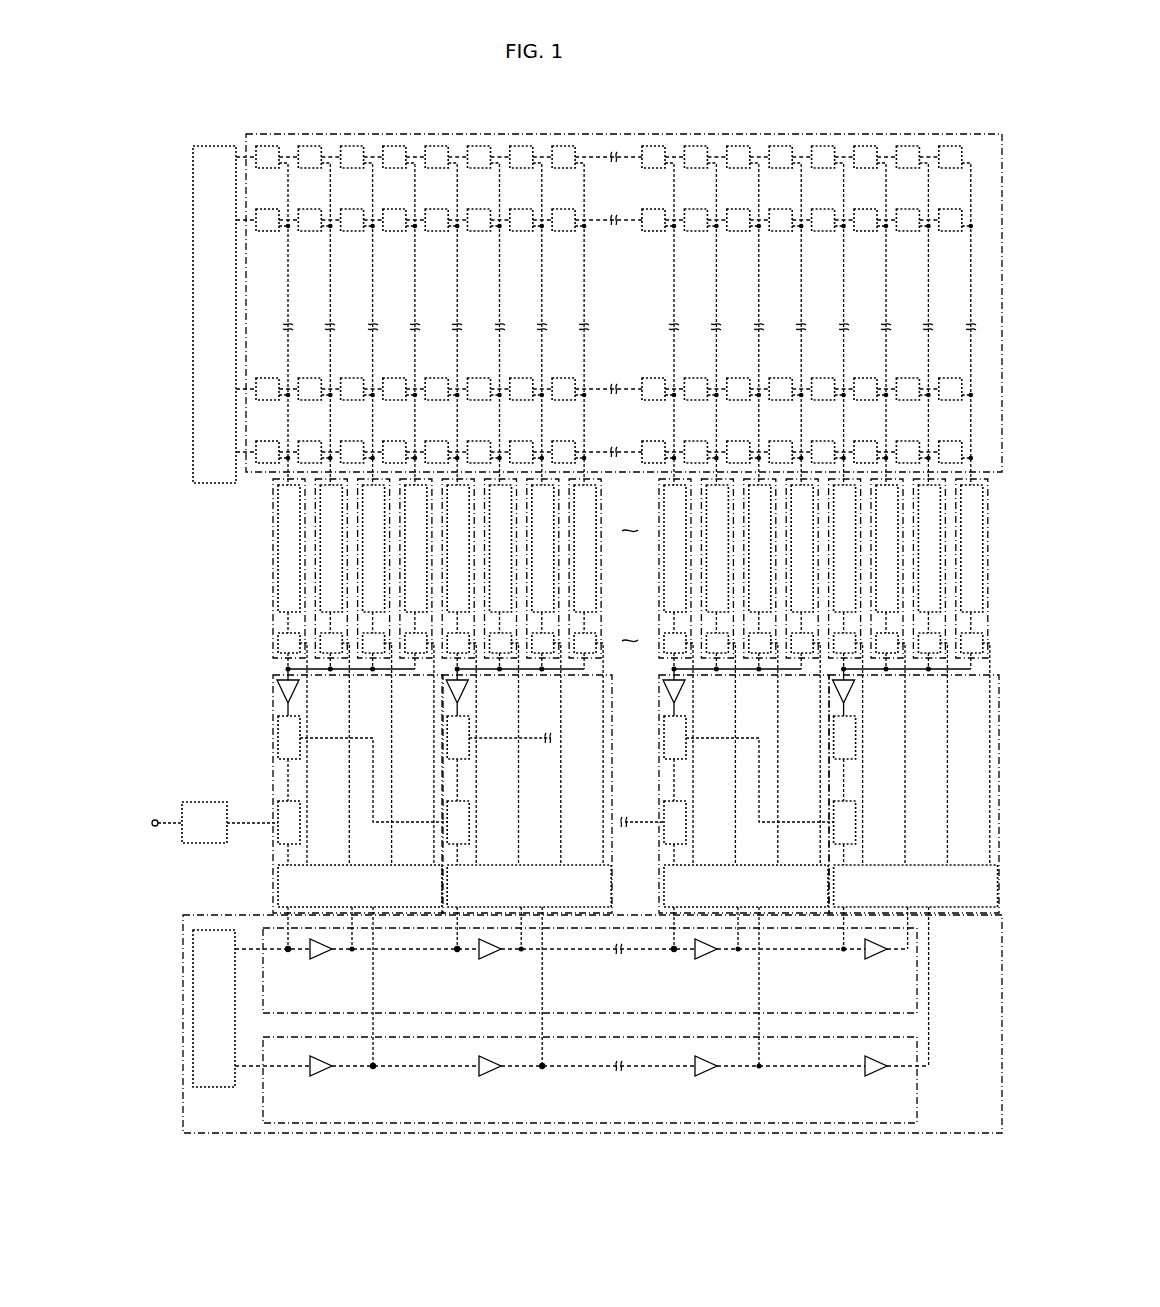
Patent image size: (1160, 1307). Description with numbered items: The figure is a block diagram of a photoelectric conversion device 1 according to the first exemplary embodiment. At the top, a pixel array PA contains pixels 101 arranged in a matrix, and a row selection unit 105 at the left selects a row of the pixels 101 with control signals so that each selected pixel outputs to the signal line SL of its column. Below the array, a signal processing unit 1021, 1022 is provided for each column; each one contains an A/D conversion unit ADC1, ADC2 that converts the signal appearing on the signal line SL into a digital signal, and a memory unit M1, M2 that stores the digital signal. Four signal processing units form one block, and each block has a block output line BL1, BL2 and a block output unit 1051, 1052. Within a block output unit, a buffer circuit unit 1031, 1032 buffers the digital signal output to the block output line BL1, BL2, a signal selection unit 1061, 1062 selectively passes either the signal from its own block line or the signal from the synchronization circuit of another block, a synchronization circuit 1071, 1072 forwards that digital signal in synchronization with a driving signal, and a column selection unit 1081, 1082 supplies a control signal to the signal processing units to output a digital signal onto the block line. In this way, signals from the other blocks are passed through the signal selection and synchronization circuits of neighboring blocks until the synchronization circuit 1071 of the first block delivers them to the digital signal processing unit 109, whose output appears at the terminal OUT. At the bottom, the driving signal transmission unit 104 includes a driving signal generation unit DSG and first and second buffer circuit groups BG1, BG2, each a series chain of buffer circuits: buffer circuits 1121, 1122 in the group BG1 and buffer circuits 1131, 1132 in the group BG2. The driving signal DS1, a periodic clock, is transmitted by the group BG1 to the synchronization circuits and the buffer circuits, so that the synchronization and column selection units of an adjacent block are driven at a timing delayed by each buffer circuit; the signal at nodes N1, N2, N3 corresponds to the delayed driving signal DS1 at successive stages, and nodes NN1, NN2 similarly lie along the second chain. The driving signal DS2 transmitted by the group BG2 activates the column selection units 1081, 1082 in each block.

The photoelectric conversion device 1 is at (558, 1182).
The pixel 101 is at (950, 146).
The driving signal transmission unit 104 is at (942, 1134).
The row selection unit 105 is at (214, 146).
The digital signal processing unit 109 is at (206, 802).
The pixel array PA is at (350, 134).
The signal line SL is at (288, 284).
The signal processing unit 1021 is at (273, 495).
The signal processing unit 1022 is at (315, 518).
The A/D conversion unit ADC1 is at (278, 562).
The A/D conversion unit ADC2 is at (320, 584).
The memory unit M1 is at (278, 646).
The memory unit M2 is at (320, 641).
The buffer circuit unit 1031 is at (277, 686).
The buffer circuit unit 1032 is at (466, 690).
The block output unit 1051 is at (273, 882).
The block output unit 1052 is at (614, 690).
The signal selection unit 1061 is at (278, 737).
The signal selection unit 1062 is at (468, 742).
The synchronization circuit 1071 is at (278, 822).
The synchronization circuit 1072 is at (468, 822).
The column selection unit 1081 is at (278, 895).
The column selection unit 1082 is at (587, 910).
The block output line BL1 is at (366, 672).
The block output line BL2 is at (580, 672).
The output terminal OUT is at (155, 820).
The driving signal DS1 is at (250, 948).
The driving signal DS2 is at (250, 1068).
The driving signal generation unit DSG is at (217, 1088).
The buffer circuit group BG1 is at (917, 968).
The buffer circuit group BG2 is at (917, 1088).
The node N1 is at (288, 953).
The node N2 is at (458, 953).
The node N3 is at (674, 953).
The node NN1 is at (373, 1070).
The node NN2 is at (542, 1070).
The buffer circuit 1121 is at (324, 960).
The buffer circuit 1122 is at (494, 960).
The buffer circuit 1131 is at (325, 1077).
The buffer circuit 1132 is at (494, 1077).